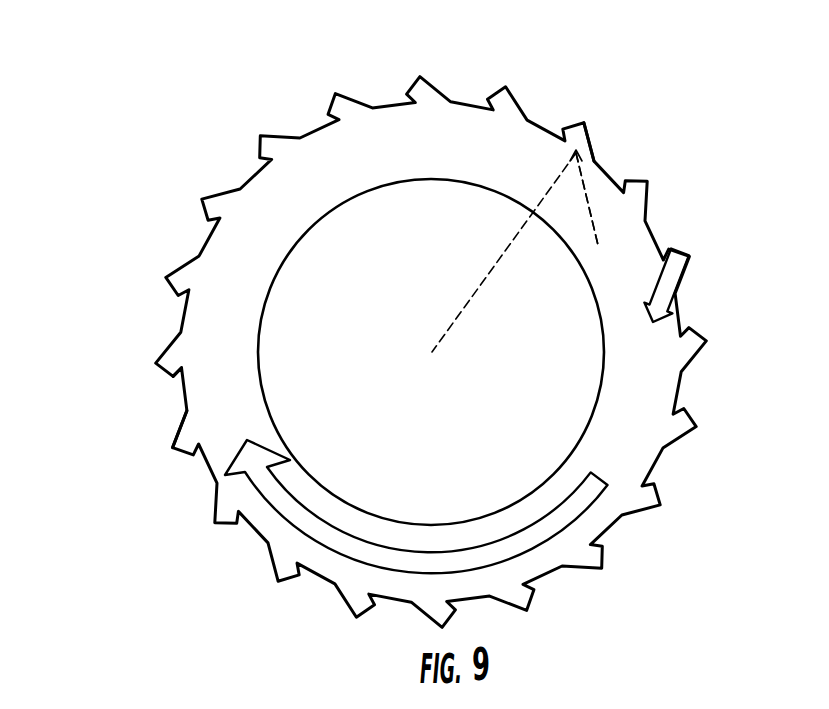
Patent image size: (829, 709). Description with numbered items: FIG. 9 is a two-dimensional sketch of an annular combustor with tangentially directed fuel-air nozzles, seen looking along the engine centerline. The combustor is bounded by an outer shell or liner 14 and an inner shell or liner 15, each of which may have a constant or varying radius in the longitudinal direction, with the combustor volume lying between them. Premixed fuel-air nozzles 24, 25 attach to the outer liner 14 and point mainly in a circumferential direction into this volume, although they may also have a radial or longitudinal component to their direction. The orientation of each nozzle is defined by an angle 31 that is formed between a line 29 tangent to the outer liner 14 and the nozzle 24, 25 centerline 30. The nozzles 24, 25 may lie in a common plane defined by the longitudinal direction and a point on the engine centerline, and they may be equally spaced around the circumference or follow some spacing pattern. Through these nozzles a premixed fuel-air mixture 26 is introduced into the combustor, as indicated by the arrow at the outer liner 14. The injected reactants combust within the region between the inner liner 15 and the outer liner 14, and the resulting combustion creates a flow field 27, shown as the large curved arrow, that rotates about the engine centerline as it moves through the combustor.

The outer shell (or liner) 14 is at (204, 243).
The inner shell (or liner) 15 is at (284, 261).
The premixed fuel-air nozzle 24 is at (162, 373).
The premixed fuel-air nozzle 25 is at (176, 437).
The premixed fuel-air mixture 26 is at (681, 251).
The flow field 27 is at (352, 530).
The line tangent to the outer liner 29 is at (604, 172).
The nozzle centerline 30 is at (588, 208).
The angle 31 is at (589, 207).